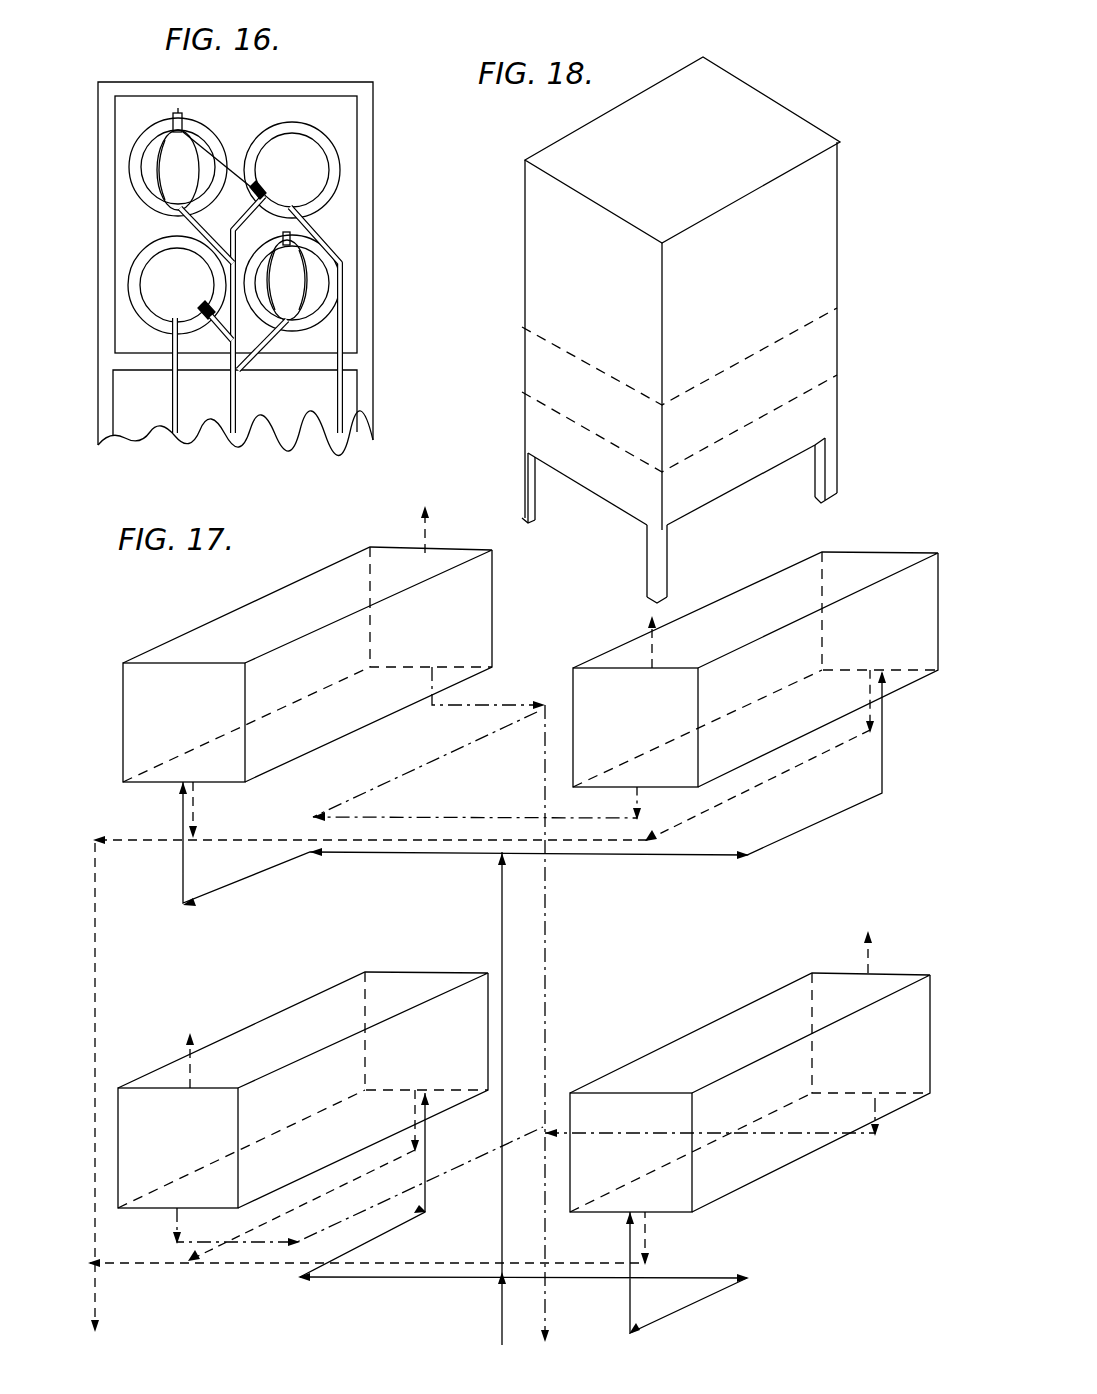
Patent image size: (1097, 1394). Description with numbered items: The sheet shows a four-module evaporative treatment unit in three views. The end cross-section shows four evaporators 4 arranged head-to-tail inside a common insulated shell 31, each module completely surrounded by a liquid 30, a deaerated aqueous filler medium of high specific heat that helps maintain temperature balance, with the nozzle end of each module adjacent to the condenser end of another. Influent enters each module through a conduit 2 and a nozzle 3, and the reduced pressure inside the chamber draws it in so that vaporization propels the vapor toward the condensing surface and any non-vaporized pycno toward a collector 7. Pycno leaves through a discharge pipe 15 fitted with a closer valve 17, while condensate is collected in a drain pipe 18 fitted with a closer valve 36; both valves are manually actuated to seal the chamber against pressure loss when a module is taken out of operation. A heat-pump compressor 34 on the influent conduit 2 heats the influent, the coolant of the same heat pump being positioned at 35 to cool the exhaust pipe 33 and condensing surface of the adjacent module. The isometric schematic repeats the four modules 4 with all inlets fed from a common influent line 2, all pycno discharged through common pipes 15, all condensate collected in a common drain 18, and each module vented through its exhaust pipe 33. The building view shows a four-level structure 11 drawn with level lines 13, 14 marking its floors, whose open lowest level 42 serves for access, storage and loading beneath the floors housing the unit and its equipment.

In FIG. 16, the conduit 2 is at (230, 403).
In FIG. 17, the conduit 2 is at (181, 808).
In FIG. 16, the nozzle 3 is at (200, 300).
In FIG. 17, the evaporator 4 is at (277, 597).
In FIG. 16, the collector 7 is at (293, 206).
In FIG. 18, the container 11 is at (830, 234).
In FIG. 18, the lower level line 13 is at (830, 406).
In FIG. 18, the upper level line 14 is at (830, 350).
In FIG. 16, the discharge pipe 15 is at (180, 391).
In FIG. 17, the discharge pipe 15 is at (197, 808).
In FIG. 16, the closer valve 17 is at (172, 316).
In FIG. 16, the drain pipe 18 is at (204, 232).
In FIG. 17, the drain pipe 18 is at (430, 683).
In FIG. 16, the liquid 30 is at (236, 218).
In FIG. 16, the insulated shell 31 is at (375, 120).
In FIG. 16, the exhaust pipe 33 is at (174, 116).
In FIG. 17, the exhaust pipe 33 is at (428, 530).
In FIG. 16, the heat-pump compressor 34 is at (262, 186).
In FIG. 16, the coolant positioning 35 is at (172, 126).
In FIG. 16, the closer valve 36 is at (186, 206).
In FIG. 18, the lowest level 42 is at (530, 505).